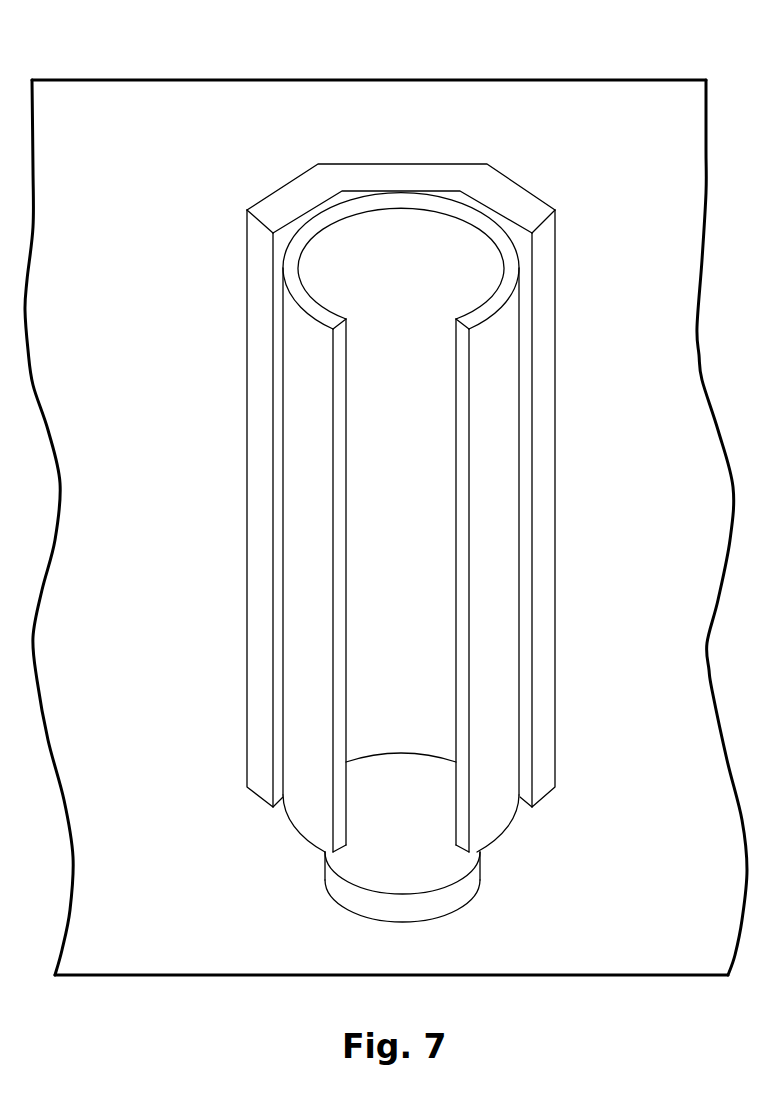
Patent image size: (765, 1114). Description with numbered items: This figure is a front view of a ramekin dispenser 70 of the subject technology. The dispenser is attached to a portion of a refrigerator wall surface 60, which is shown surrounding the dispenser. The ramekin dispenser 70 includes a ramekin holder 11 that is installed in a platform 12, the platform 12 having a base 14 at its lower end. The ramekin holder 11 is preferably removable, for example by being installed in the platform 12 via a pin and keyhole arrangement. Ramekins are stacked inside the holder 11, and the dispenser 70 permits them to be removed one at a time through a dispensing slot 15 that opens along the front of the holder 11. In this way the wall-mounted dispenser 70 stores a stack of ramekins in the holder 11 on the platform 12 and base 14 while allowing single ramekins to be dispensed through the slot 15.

The refrigerator wall surface 60 is at (623, 134).
The ramekin dispenser 70 is at (528, 163).
The platform 12 is at (540, 485).
The ramekin holder 11 is at (300, 547).
The dispensing slot 15 is at (337, 862).
The base 14 is at (450, 900).